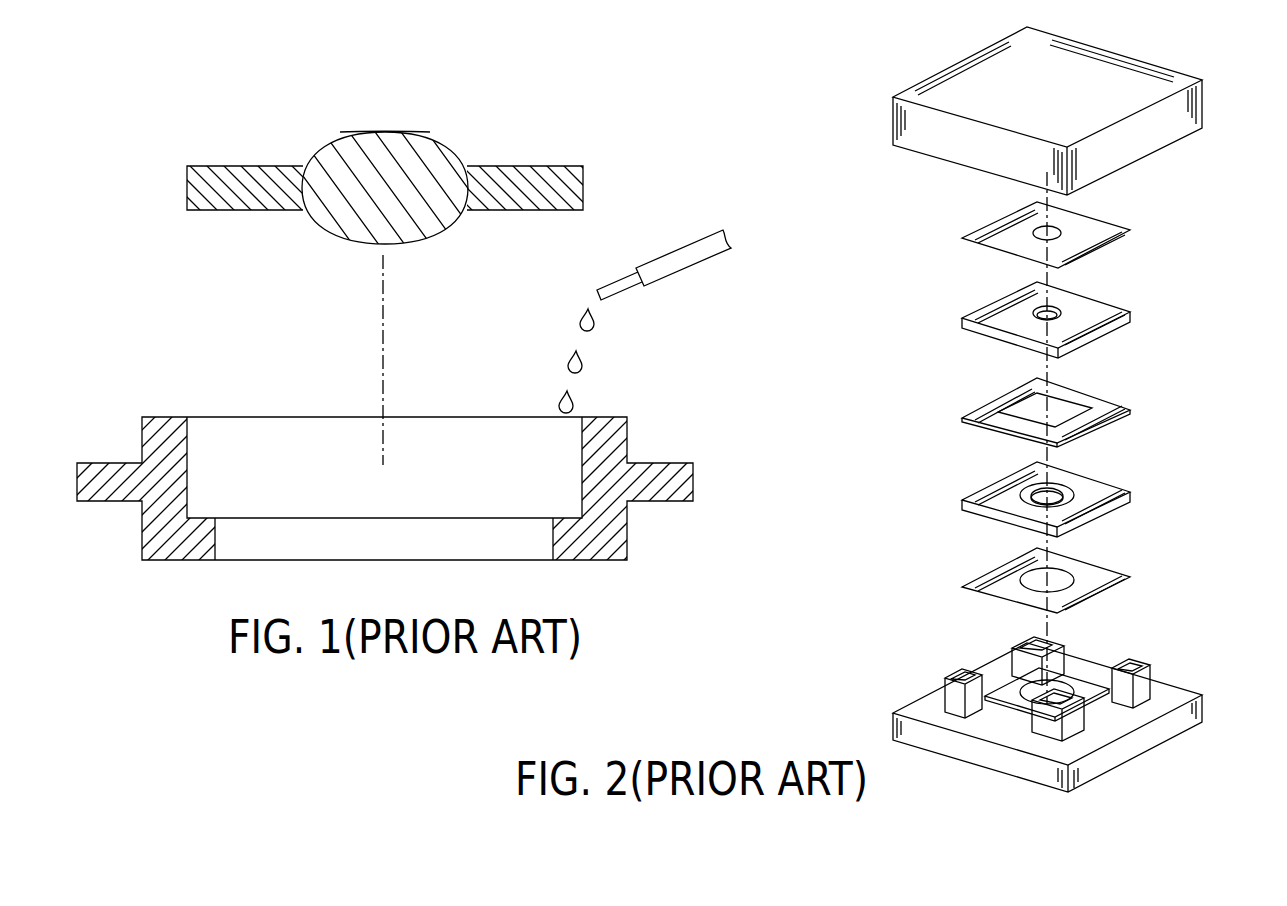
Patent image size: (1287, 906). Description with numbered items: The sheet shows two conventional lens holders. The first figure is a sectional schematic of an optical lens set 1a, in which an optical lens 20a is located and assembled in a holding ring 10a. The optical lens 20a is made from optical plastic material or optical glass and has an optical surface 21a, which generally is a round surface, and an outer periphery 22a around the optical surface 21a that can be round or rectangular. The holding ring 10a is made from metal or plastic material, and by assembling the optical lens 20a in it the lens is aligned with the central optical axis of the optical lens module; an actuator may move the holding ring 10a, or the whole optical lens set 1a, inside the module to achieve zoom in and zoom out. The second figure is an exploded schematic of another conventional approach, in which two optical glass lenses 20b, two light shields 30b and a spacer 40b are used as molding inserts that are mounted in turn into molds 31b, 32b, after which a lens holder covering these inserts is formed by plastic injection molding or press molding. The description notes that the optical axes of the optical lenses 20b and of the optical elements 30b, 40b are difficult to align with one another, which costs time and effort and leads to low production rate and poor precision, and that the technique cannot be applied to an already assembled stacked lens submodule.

In FIG. 1, the optical lens set 1a is at (688, 118).
In FIG. 1, the holding ring 10a is at (612, 430).
In FIG. 1, the optical lens 20a is at (440, 153).
In FIG. 1, the optical surface 21a is at (362, 130).
In FIG. 1, the outer periphery 22a is at (553, 165).
In FIG. 2, the mold 31b is at (1140, 80).
In FIG. 2, the light shield 30b is at (1090, 228).
In FIG. 2, the optical glass lens 20b is at (1085, 310).
In FIG. 2, the spacer 40b is at (992, 410).
In FIG. 2, the mold 32b is at (1163, 693).